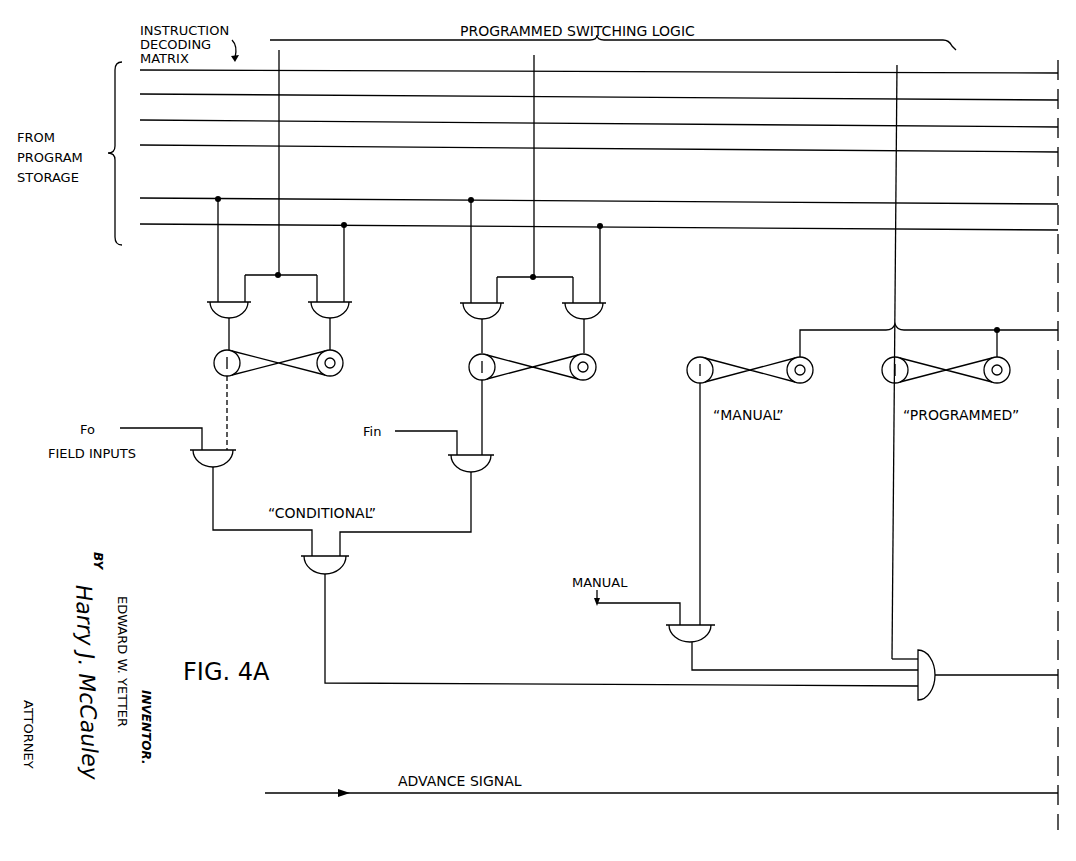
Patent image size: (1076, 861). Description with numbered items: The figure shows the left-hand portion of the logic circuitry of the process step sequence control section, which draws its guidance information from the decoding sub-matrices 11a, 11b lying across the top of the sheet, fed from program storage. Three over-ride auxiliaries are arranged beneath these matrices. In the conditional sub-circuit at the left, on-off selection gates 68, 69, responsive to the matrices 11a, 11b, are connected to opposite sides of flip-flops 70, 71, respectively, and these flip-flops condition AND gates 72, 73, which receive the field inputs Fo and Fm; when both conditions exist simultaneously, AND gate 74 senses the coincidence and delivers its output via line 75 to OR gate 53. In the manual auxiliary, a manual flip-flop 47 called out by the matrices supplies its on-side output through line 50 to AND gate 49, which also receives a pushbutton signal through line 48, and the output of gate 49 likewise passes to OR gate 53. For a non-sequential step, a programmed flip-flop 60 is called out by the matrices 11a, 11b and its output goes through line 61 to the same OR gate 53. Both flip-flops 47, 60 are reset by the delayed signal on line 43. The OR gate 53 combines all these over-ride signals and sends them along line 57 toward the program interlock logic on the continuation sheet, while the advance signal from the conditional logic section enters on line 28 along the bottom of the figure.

The sub-matrix of decoding section 11a is at (136, 58).
The sub-matrix of decoding section 11b is at (179, 190).
The on-off selection gate 68 is at (280, 284).
The on-off selection gate 69 is at (534, 290).
The flip-flop 70 is at (279, 372).
The flip-flop 71 is at (533, 378).
The manual flip-flop 47 is at (750, 360).
The programmed flip-flop 60 is at (948, 378).
The line 43 is at (961, 328).
The AND gate 72 is at (207, 466).
The AND gate 73 is at (484, 462).
The AND gate 74 is at (340, 570).
The line 50 is at (700, 512).
The line 48 is at (622, 608).
The AND gate 49 is at (712, 628).
The line 61 is at (892, 591).
The line 57 is at (1000, 674).
The OR gate 53 is at (916, 695).
The line 75 is at (497, 684).
The line 28 is at (760, 793).